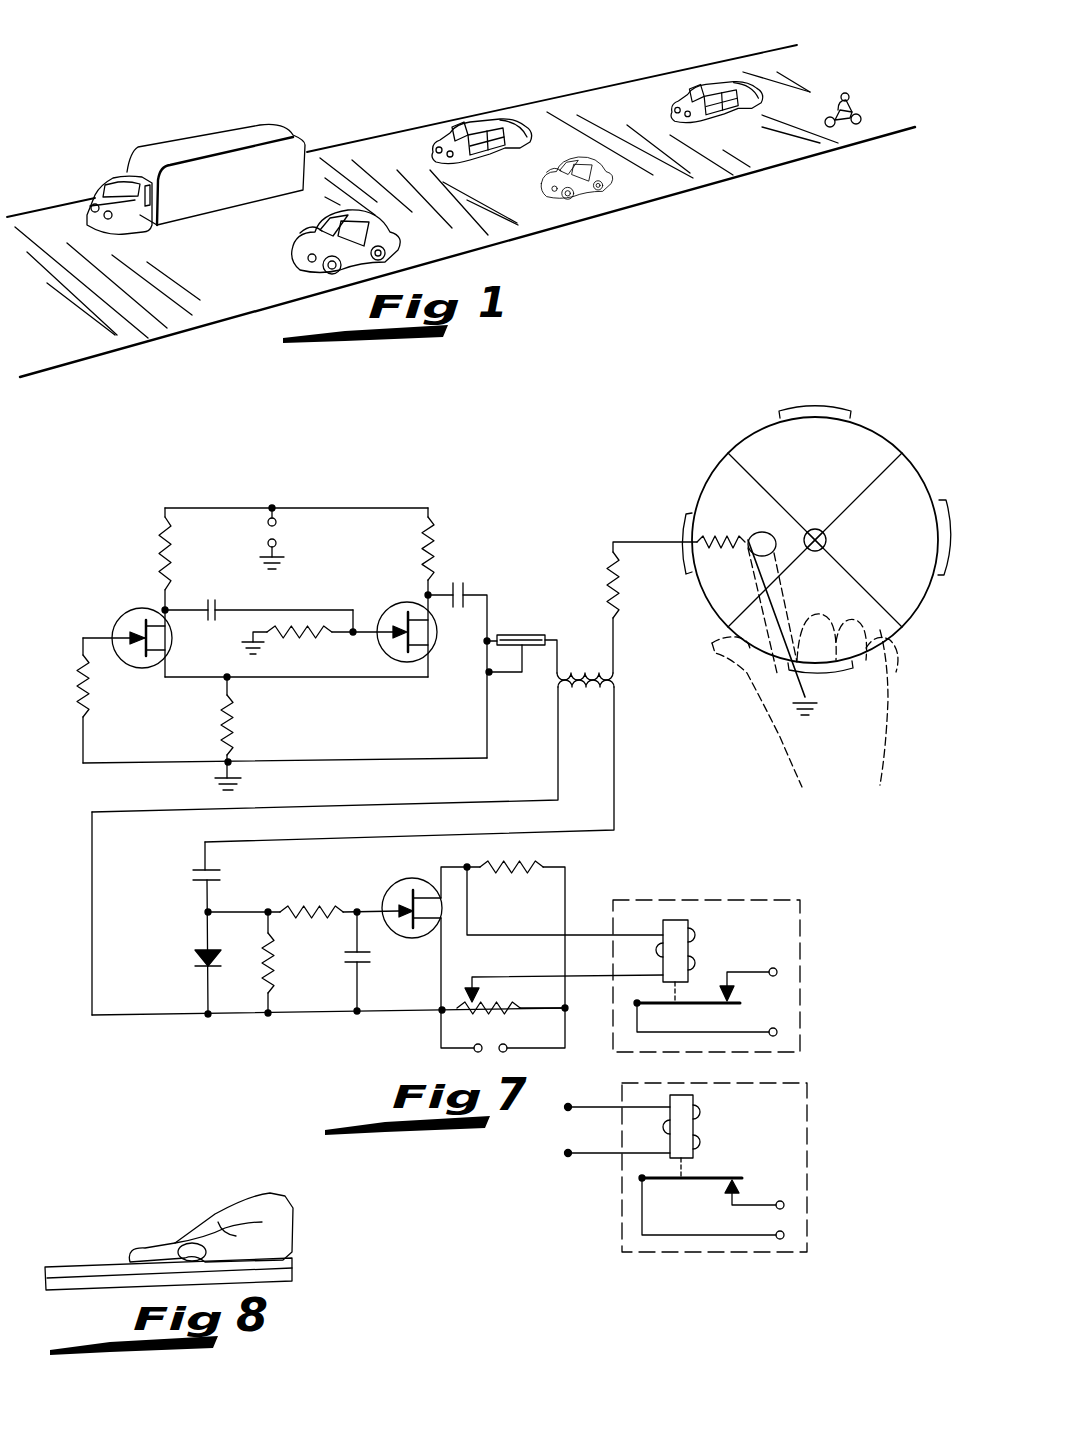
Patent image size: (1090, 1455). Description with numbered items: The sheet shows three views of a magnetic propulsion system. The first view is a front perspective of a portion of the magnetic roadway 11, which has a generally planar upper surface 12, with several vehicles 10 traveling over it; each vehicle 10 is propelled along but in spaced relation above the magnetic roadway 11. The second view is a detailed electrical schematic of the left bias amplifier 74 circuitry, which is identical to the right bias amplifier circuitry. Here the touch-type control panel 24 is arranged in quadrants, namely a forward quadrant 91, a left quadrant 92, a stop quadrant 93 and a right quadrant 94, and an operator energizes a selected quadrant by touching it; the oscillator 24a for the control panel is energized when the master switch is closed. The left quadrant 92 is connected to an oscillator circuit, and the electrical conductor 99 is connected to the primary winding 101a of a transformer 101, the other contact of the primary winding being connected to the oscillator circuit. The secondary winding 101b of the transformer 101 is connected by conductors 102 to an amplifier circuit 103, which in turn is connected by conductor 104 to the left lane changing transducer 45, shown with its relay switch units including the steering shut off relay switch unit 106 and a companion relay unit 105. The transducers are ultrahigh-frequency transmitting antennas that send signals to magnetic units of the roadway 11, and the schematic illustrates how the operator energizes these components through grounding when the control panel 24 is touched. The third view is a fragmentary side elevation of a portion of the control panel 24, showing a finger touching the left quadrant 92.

In FIG. 1, the vehicle 10 is at (597, 83).
In FIG. 1, the magnetic roadway 11 is at (459, 211).
In FIG. 1, the upper surface 12 is at (388, 148).
In FIG. 7, the control panel 24 is at (806, 549).
In FIG. 8, the control panel 24 is at (166, 1225).
In FIG. 7, the oscillator 24a is at (284, 608).
In FIG. 7, the left lane changing transducer 45 is at (717, 1031).
In FIG. 7, the left bias amplifier 74 is at (522, 588).
In FIG. 7, the forward quadrant 91 is at (746, 442).
In FIG. 7, the left quadrant 92 is at (712, 478).
In FIG. 8, the left quadrant 92 is at (113, 1265).
In FIG. 7, the stop quadrant 93 is at (870, 652).
In FIG. 7, the right quadrant 94 is at (910, 460).
In FIG. 7, the electrical conductor 99 is at (641, 542).
In FIG. 7, the transformer 101 is at (616, 665).
In FIG. 7, the primary winding 101a is at (580, 668).
In FIG. 7, the secondary winding 101b is at (602, 690).
In FIG. 7, the conductors 102 is at (600, 806).
In FIG. 7, the amplifier circuit 103 is at (319, 953).
In FIG. 7, the conductor 104 is at (542, 936).
In FIG. 7, the relay 105 is at (800, 982).
In FIG. 7, the steering shut off relay switch unit 106 is at (807, 1172).